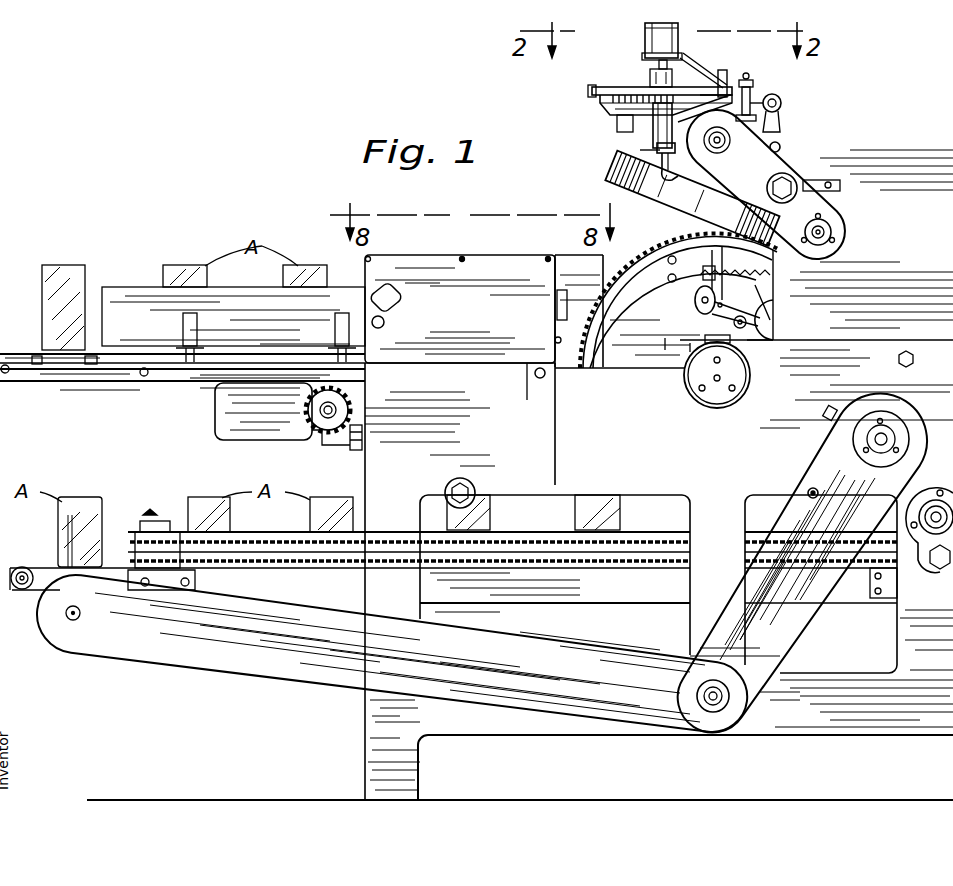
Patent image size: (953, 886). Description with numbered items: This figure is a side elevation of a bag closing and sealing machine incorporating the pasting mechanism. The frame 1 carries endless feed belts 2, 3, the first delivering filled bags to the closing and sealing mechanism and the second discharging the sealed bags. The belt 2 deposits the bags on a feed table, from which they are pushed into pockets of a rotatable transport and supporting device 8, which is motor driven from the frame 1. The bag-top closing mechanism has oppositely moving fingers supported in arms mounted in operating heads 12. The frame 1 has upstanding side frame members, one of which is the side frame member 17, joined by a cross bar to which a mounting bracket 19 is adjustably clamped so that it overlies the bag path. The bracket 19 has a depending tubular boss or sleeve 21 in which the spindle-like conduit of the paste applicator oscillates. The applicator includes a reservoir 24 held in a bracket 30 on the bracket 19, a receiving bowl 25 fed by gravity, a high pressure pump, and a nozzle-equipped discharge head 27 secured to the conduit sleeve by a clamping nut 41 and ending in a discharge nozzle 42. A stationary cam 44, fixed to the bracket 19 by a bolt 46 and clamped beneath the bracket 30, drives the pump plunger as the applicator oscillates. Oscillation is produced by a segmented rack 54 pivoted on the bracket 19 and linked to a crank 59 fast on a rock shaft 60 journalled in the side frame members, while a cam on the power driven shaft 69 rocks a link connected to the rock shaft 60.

The frame 1 is at (708, 601).
The endless feed belt 2 is at (18, 352).
The endless feed belt 3 is at (110, 568).
The rotatable transport and supporting device 8 is at (688, 256).
The operating head 12 is at (692, 198).
The side frame member 17 is at (924, 240).
The mounting bracket 19 is at (700, 110).
The depending tubular boss or sleeve 21 is at (653, 128).
The reservoir 24 is at (657, 38).
The receiving tank or bowl 25 is at (650, 75).
The nozzle-equipped discharge head 27 is at (640, 152).
The bracket 30 is at (692, 84).
The clamping nut 41 is at (657, 148).
The discharge nozzle 42 is at (655, 178).
The stationary cam 44 is at (728, 92).
The bolt 46 is at (594, 89).
The segmented rack or gear 54 is at (600, 104).
The crank 59 is at (780, 118).
The rock shaft 60 is at (779, 147).
The rotary power driven shaft 69 is at (820, 232).